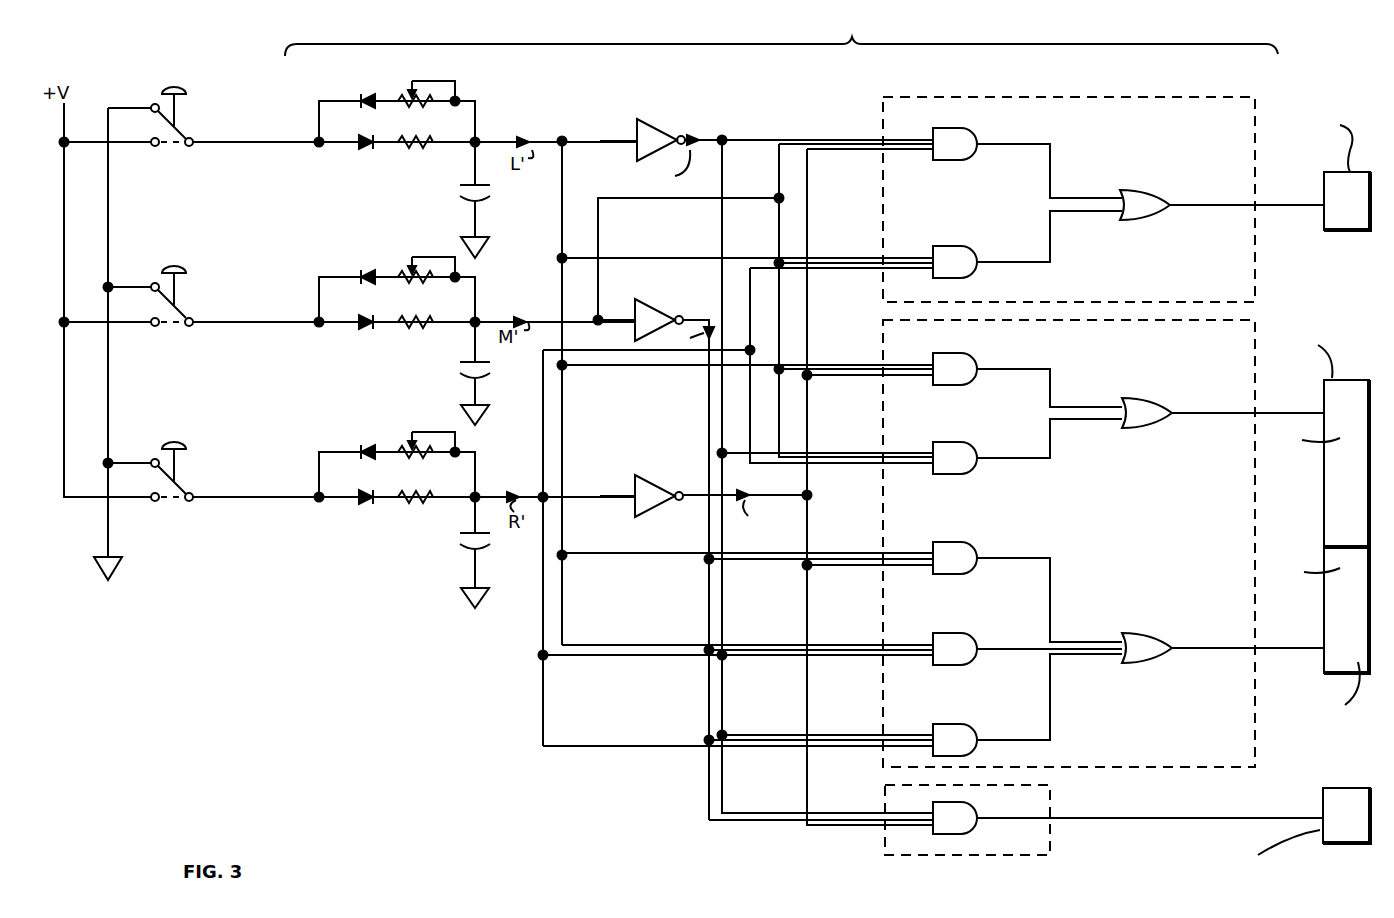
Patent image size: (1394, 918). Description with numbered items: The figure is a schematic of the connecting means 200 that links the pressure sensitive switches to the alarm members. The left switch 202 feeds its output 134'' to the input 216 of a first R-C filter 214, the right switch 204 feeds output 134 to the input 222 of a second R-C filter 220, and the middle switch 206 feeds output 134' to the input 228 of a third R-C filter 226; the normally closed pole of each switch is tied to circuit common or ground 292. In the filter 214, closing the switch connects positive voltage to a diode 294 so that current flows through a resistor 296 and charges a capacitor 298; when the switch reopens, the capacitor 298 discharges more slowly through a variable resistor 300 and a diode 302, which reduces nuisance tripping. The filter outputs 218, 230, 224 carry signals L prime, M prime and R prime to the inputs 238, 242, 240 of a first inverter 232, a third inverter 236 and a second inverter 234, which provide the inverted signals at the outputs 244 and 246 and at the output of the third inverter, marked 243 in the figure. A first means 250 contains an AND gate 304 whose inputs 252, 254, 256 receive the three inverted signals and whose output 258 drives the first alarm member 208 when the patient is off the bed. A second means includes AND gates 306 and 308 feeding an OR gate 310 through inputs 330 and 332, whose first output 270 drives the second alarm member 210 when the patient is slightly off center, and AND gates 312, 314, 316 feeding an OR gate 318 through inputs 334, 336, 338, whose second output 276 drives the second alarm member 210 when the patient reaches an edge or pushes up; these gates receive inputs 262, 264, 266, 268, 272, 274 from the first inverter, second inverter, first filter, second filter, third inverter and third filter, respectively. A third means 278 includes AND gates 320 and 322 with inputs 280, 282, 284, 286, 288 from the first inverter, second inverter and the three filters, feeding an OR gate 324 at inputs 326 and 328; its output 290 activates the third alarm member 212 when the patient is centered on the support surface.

The connecting means 200 is at (781, 35).
The pressure sensitive switch 202 is at (188, 124).
The pressure sensitive switch 204 is at (186, 484).
The pressure sensitive switch 206 is at (186, 306).
The first alarm member 208 is at (1322, 800).
The second alarm member 210 is at (1358, 380).
The third alarm member 212 is at (1330, 232).
The R-C filter 214 is at (406, 145).
The input 216 is at (318, 150).
The output 218 is at (472, 155).
The R-C filter 220 is at (382, 488).
The input 222 is at (318, 508).
The output 224 is at (473, 492).
The R-C filter 226 is at (403, 305).
The input 228 is at (318, 330).
The output 230 is at (484, 316).
The inverter 232 is at (660, 120).
The inverter 234 is at (660, 480).
The inverter 236 is at (658, 300).
The input 238 is at (618, 136).
The input 240 is at (600, 494).
The input 242 is at (618, 300).
The inverter output 243 is at (688, 320).
The output 244 is at (690, 138).
The output 246 is at (662, 510).
The first means 250 is at (1257, 318).
The input 252 is at (850, 827).
The input 254 is at (872, 828).
The input 256 is at (862, 811).
The output 258 is at (1126, 817).
The input 262 is at (918, 452).
The input 264 is at (882, 376).
The input 266 is at (870, 363).
The input 268 is at (815, 466).
The first output 270 is at (1302, 412).
The input 272 is at (875, 554).
The input 274 is at (848, 376).
The second output 276 is at (1300, 645).
The third means 278 is at (1110, 96).
The input 280 is at (845, 140).
The input 282 is at (866, 152).
The input 284 is at (832, 254).
The input 286 is at (862, 272).
The input 288 is at (798, 136).
The output 290 is at (1308, 204).
The circuit common 292 is at (112, 585).
The diode 294 is at (352, 138).
The resistor 296 is at (433, 138).
The capacitor 298 is at (488, 200).
The variable resistor 300 is at (440, 88).
The diode 302 is at (365, 92).
The AND gate 304 is at (982, 804).
The AND gate 306 is at (972, 353).
The AND gate 308 is at (985, 432).
The OR gate 310 is at (1150, 398).
The AND gate 312 is at (960, 541).
The AND gate 314 is at (985, 622).
The AND gate 316 is at (988, 712).
The OR gate 318 is at (1170, 620).
The AND gate 320 is at (965, 127).
The AND gate 322 is at (992, 244).
The OR gate 324 is at (1160, 190).
The input 326 is at (1022, 142).
The input 328 is at (1030, 264).
The input 330 is at (1030, 368).
The input 332 is at (1022, 457).
The input 334 is at (1025, 557).
The input 336 is at (1020, 648).
The input 338 is at (1022, 739).
The output 134 is at (209, 527).
The output 134' is at (216, 347).
The output 134'' is at (225, 166).